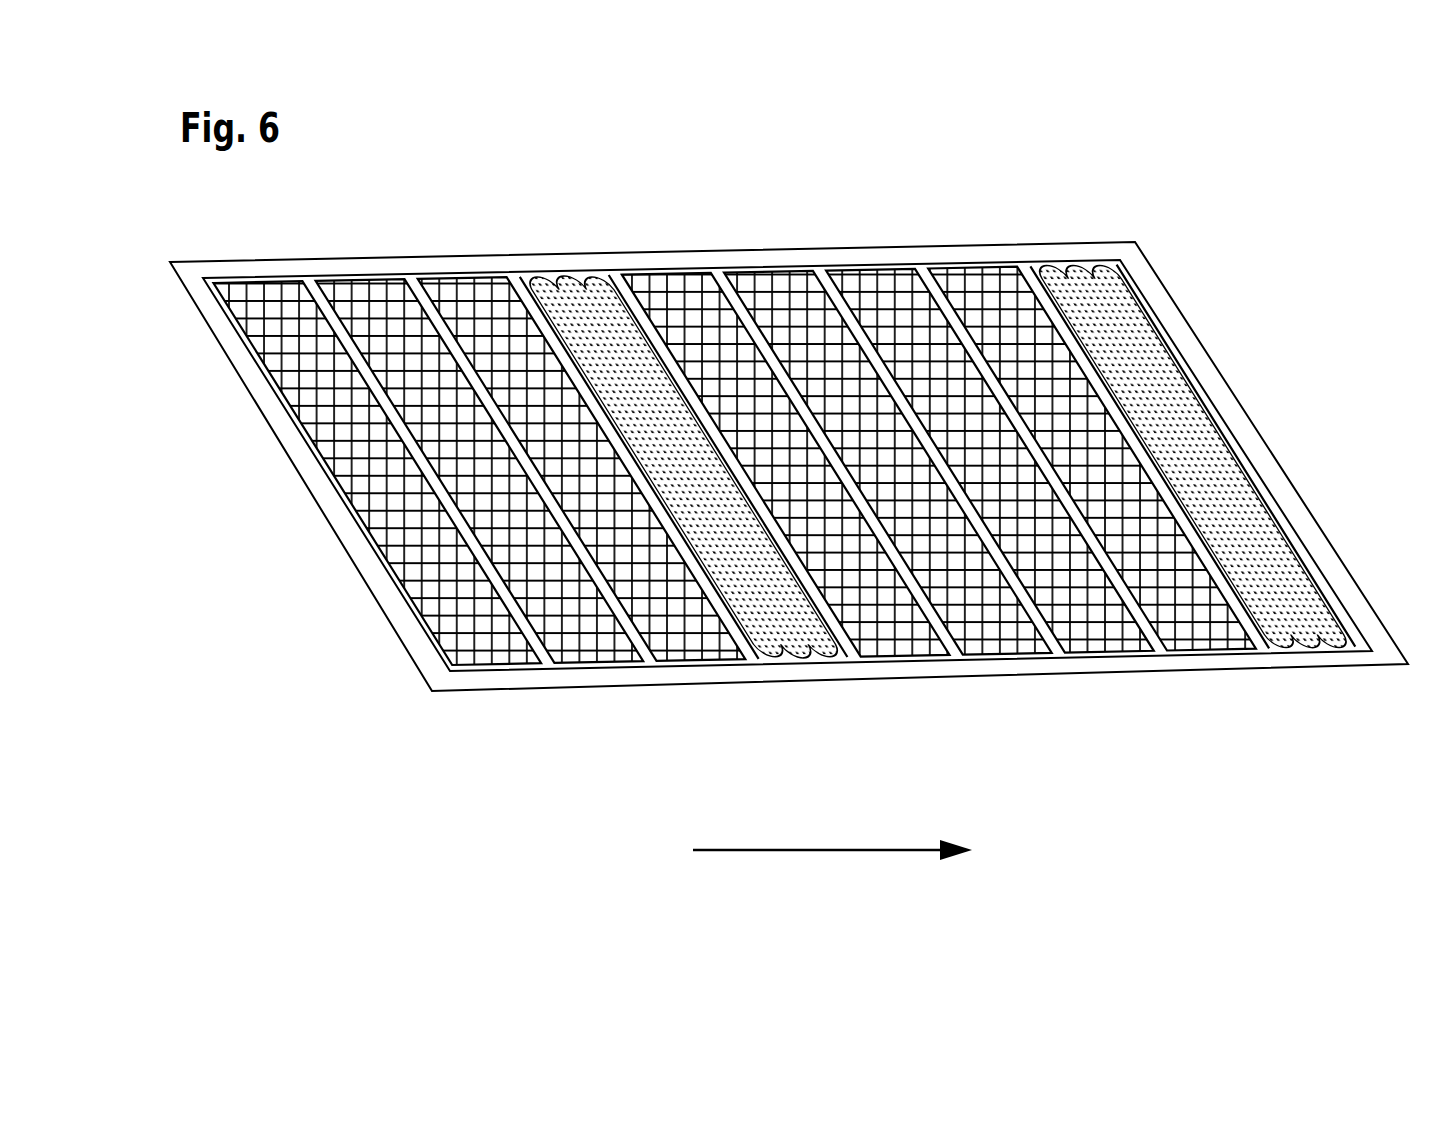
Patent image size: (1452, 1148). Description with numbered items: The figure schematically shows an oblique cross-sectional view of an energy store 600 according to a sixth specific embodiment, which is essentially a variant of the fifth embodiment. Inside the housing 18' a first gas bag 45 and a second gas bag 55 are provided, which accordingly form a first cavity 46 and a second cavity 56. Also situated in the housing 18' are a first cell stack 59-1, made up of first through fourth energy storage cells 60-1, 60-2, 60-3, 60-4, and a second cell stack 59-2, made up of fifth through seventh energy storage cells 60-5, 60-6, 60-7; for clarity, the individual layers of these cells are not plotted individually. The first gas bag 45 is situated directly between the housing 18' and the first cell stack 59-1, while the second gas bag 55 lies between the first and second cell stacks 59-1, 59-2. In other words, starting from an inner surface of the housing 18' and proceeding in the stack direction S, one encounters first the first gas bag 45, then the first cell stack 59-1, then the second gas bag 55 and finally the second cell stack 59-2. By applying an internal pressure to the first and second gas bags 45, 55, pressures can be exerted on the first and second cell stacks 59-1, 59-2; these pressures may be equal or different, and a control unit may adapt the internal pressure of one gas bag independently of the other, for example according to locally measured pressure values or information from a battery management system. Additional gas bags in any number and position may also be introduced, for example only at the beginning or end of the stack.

The energy store 600 is at (266, 236).
The housing 18' is at (787, 503).
The second gas bag 55 is at (542, 278).
The second cavity 56 is at (605, 307).
The first gas bag 45 is at (1053, 303).
The first cavity 46 is at (1113, 283).
The first energy storage cell 60-1 is at (1220, 634).
The second energy storage cell 60-2 is at (1115, 636).
The third energy storage cell 60-3 is at (1003, 640).
The fourth energy storage cell 60-4 is at (895, 640).
The fifth energy storage cell 60-5 is at (707, 650).
The sixth energy storage cell 60-6 is at (595, 650).
The seventh energy storage cell 60-7 is at (487, 652).
The first cell stack 59-1 is at (1243, 776).
The second cell stack 59-2 is at (720, 776).
The stack direction S is at (795, 848).